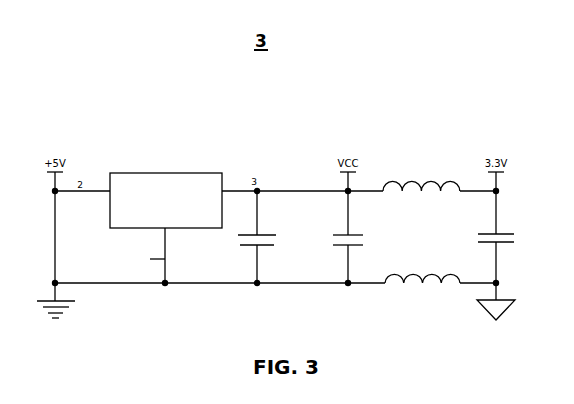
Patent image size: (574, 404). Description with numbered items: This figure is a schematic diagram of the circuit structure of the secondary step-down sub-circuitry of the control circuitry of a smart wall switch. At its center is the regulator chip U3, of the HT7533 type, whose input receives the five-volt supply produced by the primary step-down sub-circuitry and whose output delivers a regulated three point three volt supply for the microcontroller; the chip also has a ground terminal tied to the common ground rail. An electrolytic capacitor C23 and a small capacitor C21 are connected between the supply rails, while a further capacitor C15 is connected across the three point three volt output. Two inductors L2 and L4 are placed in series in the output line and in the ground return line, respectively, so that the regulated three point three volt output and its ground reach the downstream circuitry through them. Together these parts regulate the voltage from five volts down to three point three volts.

The voltage regulator HT7533-1 SOT-23-5 U3 is at (166, 213).
The electrolytic capacitor 220uF/16V C23 is at (277, 241).
The capacitor 0.1uF C21 is at (364, 242).
The capacitor 0.1uF C15 is at (506, 246).
The inductor 0R L2 is at (421, 189).
The inductor 0R L4 is at (422, 281).